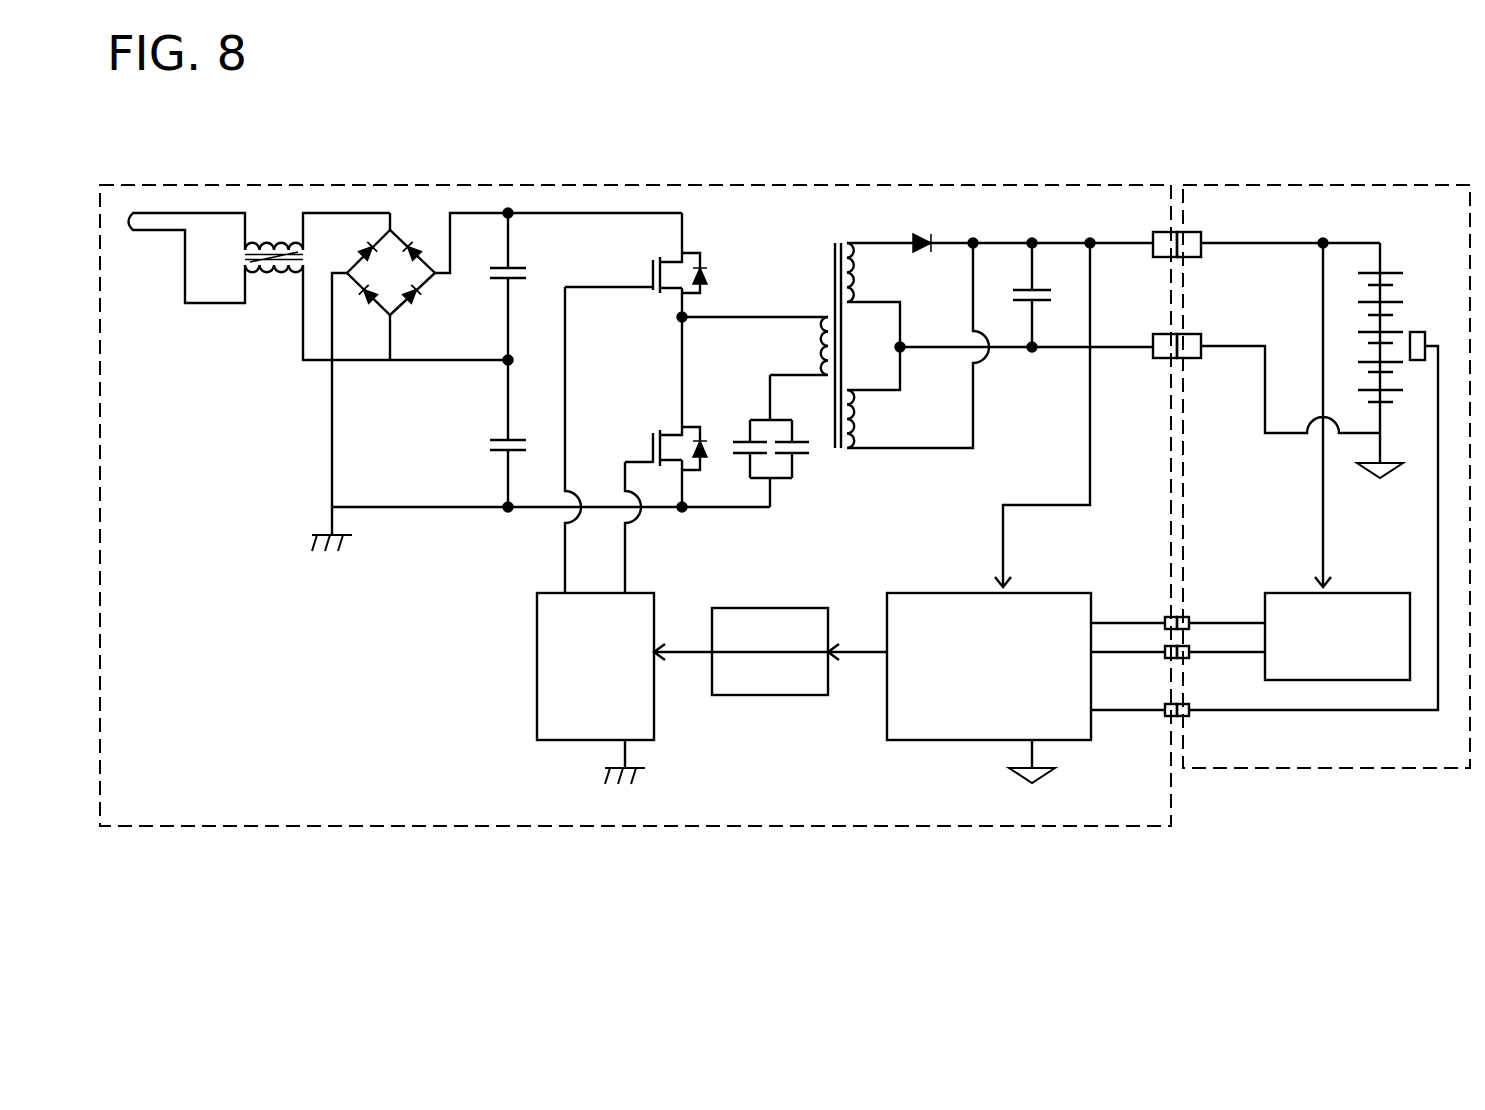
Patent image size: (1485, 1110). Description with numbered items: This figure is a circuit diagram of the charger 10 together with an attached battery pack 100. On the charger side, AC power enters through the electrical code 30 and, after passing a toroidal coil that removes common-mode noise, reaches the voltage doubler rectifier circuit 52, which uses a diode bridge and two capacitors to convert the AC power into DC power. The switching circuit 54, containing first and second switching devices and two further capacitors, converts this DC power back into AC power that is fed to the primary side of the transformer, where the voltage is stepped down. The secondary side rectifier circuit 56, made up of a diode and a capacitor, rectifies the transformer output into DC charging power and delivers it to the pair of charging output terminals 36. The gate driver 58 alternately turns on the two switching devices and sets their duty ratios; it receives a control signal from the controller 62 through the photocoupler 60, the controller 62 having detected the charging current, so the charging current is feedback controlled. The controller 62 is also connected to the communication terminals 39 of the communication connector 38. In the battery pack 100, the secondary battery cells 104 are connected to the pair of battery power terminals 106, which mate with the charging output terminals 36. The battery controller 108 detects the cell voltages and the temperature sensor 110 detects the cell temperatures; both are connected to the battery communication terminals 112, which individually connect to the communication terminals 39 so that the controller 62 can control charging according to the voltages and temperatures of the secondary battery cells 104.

The charger 10 is at (198, 830).
The electrical code 30 is at (160, 213).
The charging output terminal 36 is at (1155, 335).
The communication connector 38 is at (1180, 717).
The communication terminals 39 is at (1165, 708).
The voltage doubler rectifier circuit 52 is at (434, 184).
The switching circuit 54 is at (647, 186).
The secondary side rectifier circuit 56 is at (905, 186).
The gate driver 58 is at (565, 742).
The photocoupler 60 is at (770, 697).
The controller 62 is at (945, 742).
The battery pack 100 is at (1280, 183).
The secondary battery cells 104 is at (1398, 270).
The battery power terminals 106 is at (1200, 335).
The battery controller 108 is at (1400, 682).
The temperature sensor 110 is at (1421, 332).
The battery communication terminals 112 is at (1190, 710).